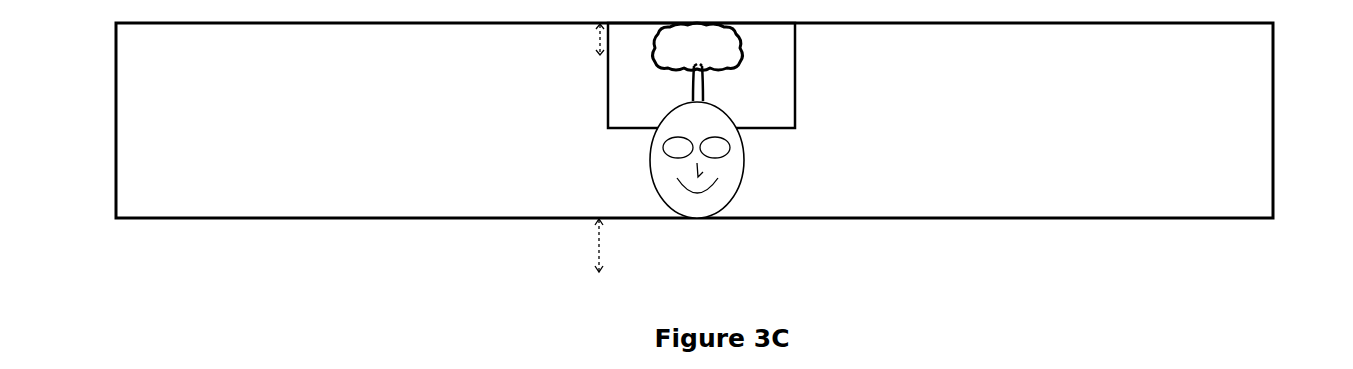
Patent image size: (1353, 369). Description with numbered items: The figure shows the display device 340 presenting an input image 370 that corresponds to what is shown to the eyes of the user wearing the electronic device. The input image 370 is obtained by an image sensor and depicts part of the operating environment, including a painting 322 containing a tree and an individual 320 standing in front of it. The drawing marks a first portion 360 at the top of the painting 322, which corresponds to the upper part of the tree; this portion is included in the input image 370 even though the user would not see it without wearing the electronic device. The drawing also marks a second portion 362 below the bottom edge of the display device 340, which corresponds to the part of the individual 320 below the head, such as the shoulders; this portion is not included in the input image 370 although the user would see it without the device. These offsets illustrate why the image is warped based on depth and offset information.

The individual 320 is at (648, 160).
The painting 322 is at (796, 57).
The display device 340 is at (116, 68).
The first portion 360 is at (597, 33).
The second portion 362 is at (598, 253).
The input image 370 is at (1170, 70).